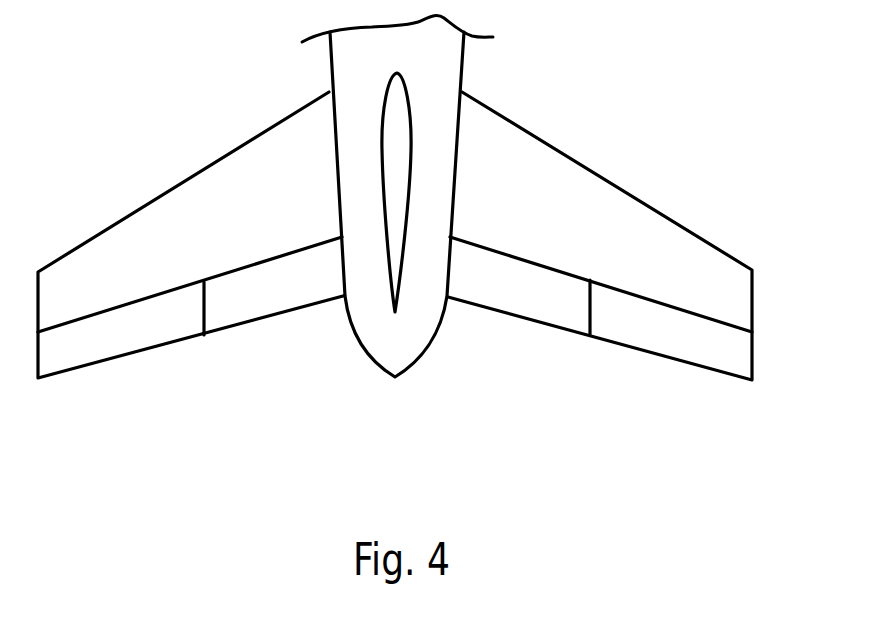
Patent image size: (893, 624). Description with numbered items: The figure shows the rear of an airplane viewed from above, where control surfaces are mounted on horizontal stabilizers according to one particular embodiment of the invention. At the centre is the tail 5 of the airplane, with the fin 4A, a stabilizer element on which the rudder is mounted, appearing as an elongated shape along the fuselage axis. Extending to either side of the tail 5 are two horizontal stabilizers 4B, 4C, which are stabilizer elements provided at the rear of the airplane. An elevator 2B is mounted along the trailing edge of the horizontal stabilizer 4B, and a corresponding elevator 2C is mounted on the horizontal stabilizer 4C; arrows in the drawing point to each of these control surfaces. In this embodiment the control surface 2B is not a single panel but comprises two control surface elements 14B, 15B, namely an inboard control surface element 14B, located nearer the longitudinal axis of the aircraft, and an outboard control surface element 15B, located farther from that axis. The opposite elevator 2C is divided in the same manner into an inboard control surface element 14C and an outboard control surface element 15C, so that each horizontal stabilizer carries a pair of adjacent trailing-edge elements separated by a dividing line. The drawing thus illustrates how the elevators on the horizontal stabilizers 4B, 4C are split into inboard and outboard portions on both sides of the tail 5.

The fin 4A is at (392, 154).
The horizontal stabilizer 4B is at (620, 215).
The horizontal stabilizer 4C is at (135, 242).
The tail 5 is at (372, 348).
The inboard control surface element 14B is at (506, 293).
The inboard control surface element 14C is at (257, 305).
The outboard control surface element 15B is at (680, 343).
The outboard control surface element 15C is at (92, 350).
The elevator 2B is at (603, 348).
The elevator 2C is at (195, 370).